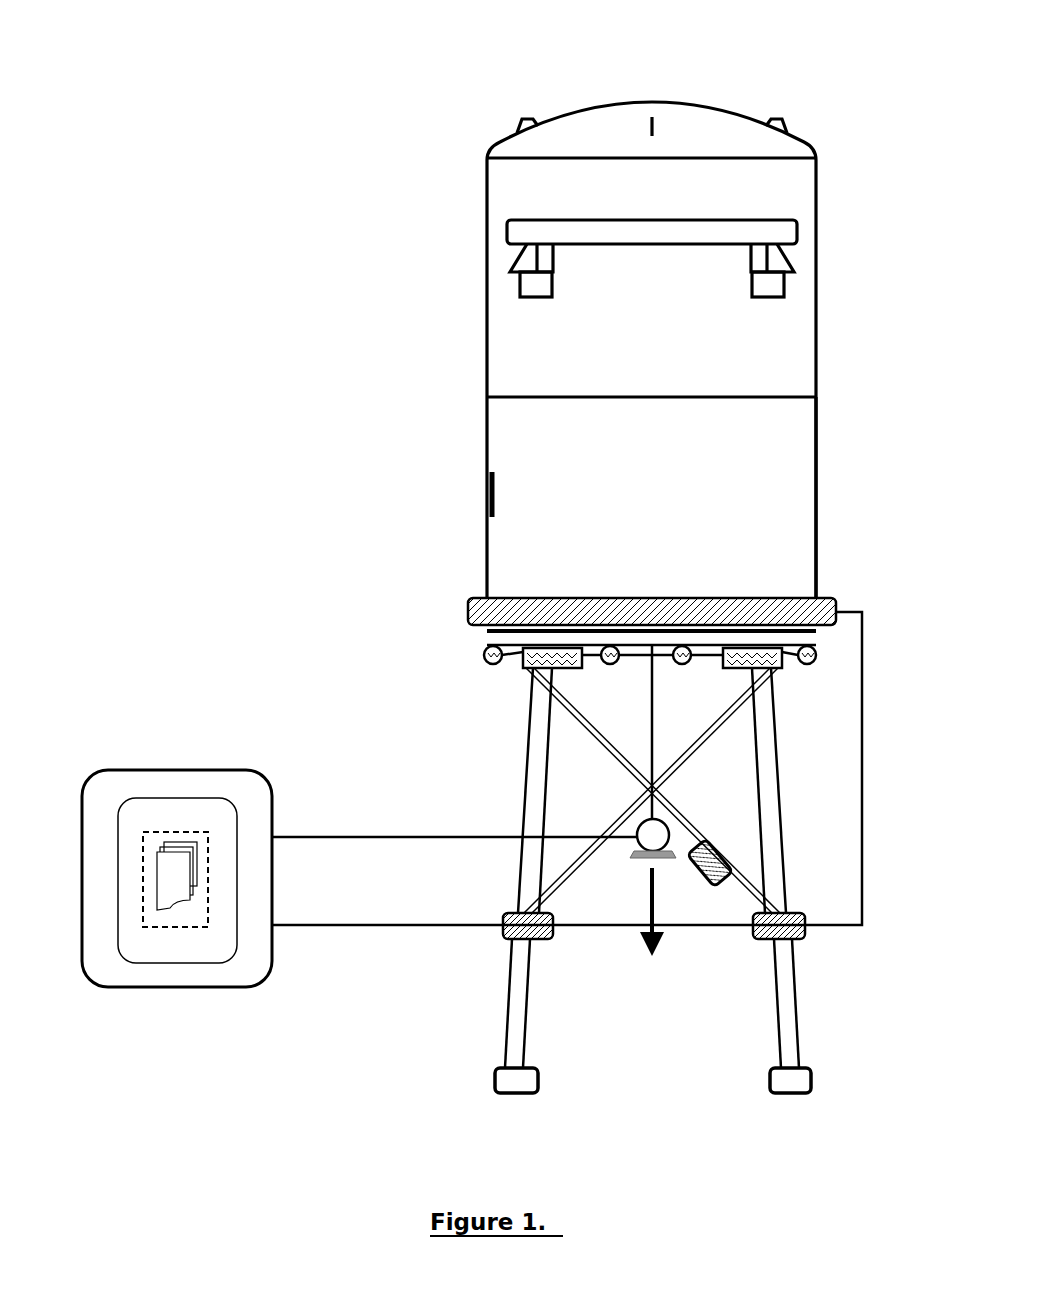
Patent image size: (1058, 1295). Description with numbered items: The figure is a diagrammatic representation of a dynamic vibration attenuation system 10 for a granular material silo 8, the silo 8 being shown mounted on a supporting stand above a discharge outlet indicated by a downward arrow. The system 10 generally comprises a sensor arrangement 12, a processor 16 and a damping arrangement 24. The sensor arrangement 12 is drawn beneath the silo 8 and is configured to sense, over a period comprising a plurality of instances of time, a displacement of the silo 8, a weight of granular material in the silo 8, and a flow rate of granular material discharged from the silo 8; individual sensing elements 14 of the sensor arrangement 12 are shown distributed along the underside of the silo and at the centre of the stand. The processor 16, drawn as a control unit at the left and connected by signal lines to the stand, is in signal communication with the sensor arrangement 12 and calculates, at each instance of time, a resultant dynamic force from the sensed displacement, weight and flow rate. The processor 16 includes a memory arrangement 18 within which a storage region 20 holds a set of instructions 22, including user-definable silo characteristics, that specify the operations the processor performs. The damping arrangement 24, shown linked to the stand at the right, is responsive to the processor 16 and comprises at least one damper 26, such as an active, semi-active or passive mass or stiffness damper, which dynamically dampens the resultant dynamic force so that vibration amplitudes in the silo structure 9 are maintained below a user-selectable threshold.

The granular material silo 8 is at (842, 118).
The silo structure 9 is at (816, 450).
The dynamic vibration attenuation system 10 is at (191, 248).
The sensor arrangement 12 is at (492, 692).
The load sensors 14 is at (640, 828).
The processor 16 is at (236, 770).
The memory arrangement 18 is at (118, 815).
The memory 20 is at (205, 926).
The set of instructions 22 is at (167, 890).
The damping arrangement 24 is at (888, 640).
The damper 26 is at (822, 628).